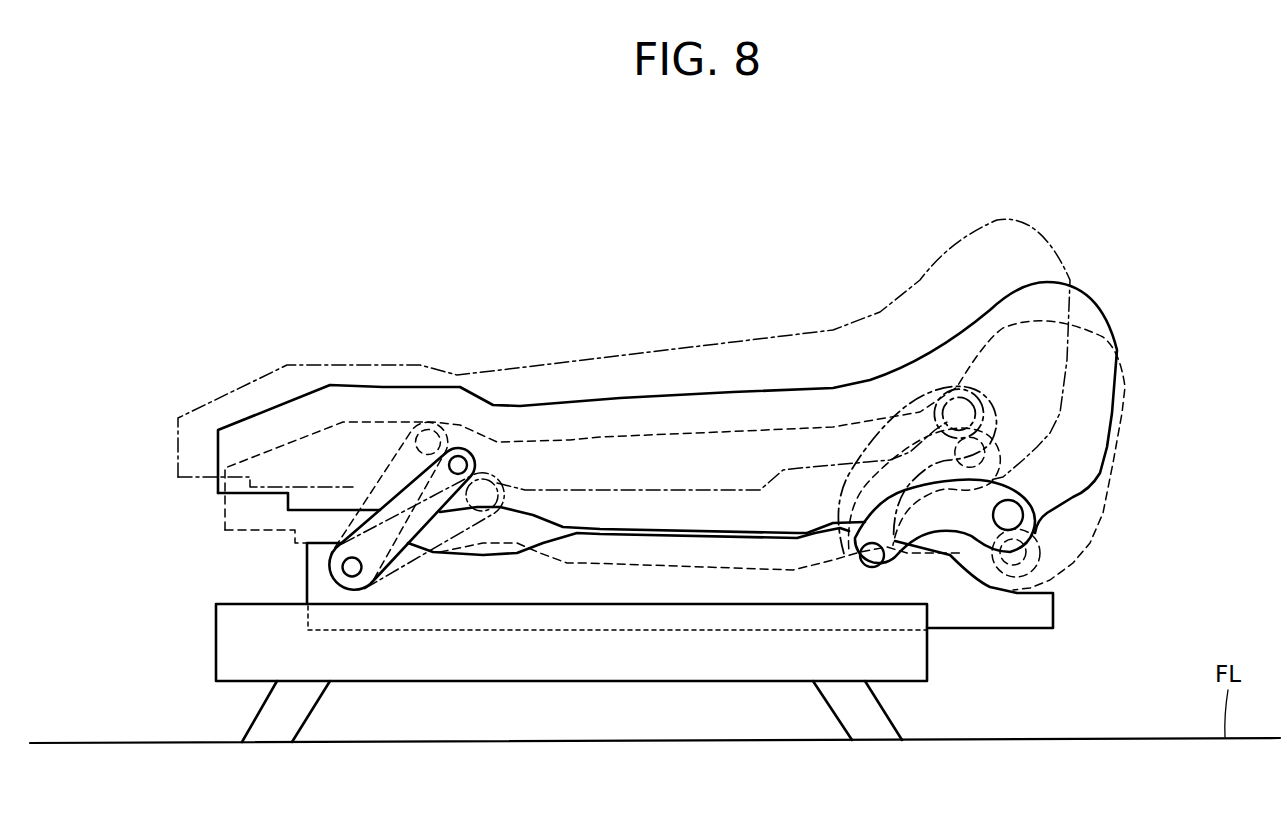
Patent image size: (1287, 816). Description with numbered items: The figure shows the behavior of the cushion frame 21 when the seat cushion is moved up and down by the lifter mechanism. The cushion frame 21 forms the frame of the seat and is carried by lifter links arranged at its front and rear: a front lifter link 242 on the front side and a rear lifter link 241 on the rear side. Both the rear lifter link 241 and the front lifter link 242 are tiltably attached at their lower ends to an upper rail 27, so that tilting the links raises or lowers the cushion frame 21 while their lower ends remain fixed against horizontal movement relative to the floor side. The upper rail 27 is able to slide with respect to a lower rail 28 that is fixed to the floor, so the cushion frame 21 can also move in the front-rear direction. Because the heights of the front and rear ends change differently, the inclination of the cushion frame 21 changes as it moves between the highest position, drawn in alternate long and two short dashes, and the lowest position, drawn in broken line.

The cushion frame 21 is at (233, 449).
The front lifter link 242 is at (337, 568).
The rear lifter link 241 is at (1028, 515).
The upper rail 27 is at (1043, 610).
The lower rail 28 is at (917, 655).